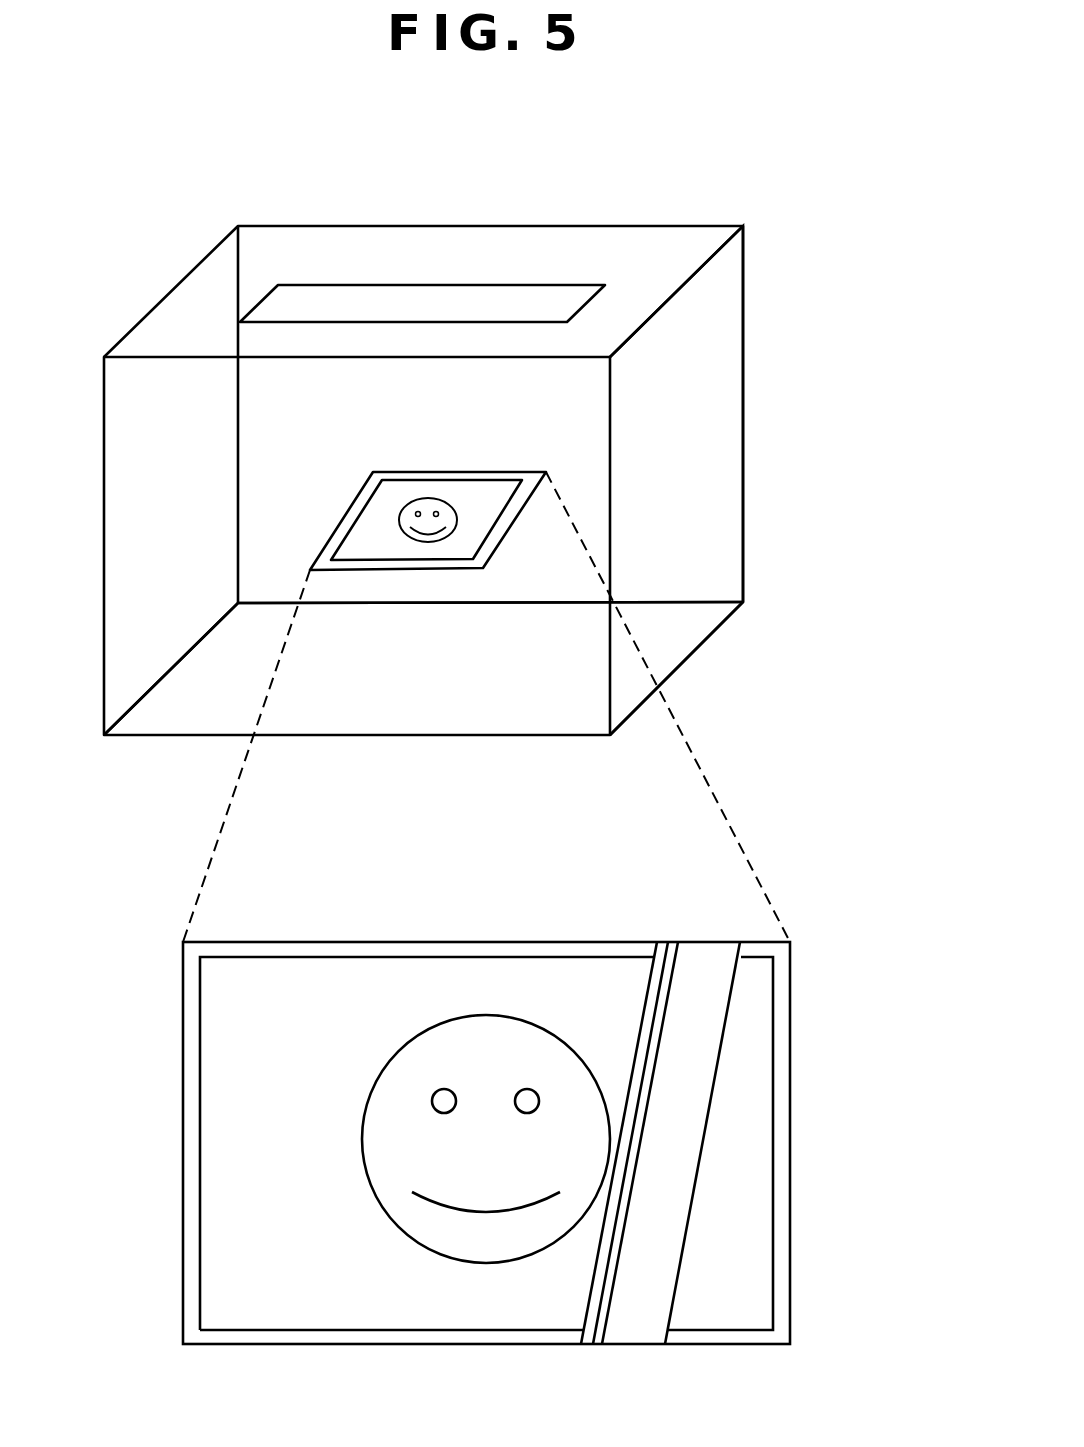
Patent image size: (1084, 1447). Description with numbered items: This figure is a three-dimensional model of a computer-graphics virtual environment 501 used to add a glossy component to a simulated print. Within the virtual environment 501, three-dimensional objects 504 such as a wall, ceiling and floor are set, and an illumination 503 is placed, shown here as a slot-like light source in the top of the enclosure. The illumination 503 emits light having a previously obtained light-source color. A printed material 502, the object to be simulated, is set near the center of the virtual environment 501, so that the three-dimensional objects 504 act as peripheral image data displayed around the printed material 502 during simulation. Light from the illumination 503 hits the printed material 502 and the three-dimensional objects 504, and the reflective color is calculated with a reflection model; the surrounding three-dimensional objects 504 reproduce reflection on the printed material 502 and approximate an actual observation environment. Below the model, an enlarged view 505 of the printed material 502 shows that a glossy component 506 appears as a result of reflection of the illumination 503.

The virtual environment 501 is at (799, 190).
The printed material 502 is at (502, 488).
The illumination 503 is at (552, 302).
The 3D objects 504 is at (677, 633).
The enlarged view 505 is at (799, 901).
The glossy component 506 is at (720, 1057).